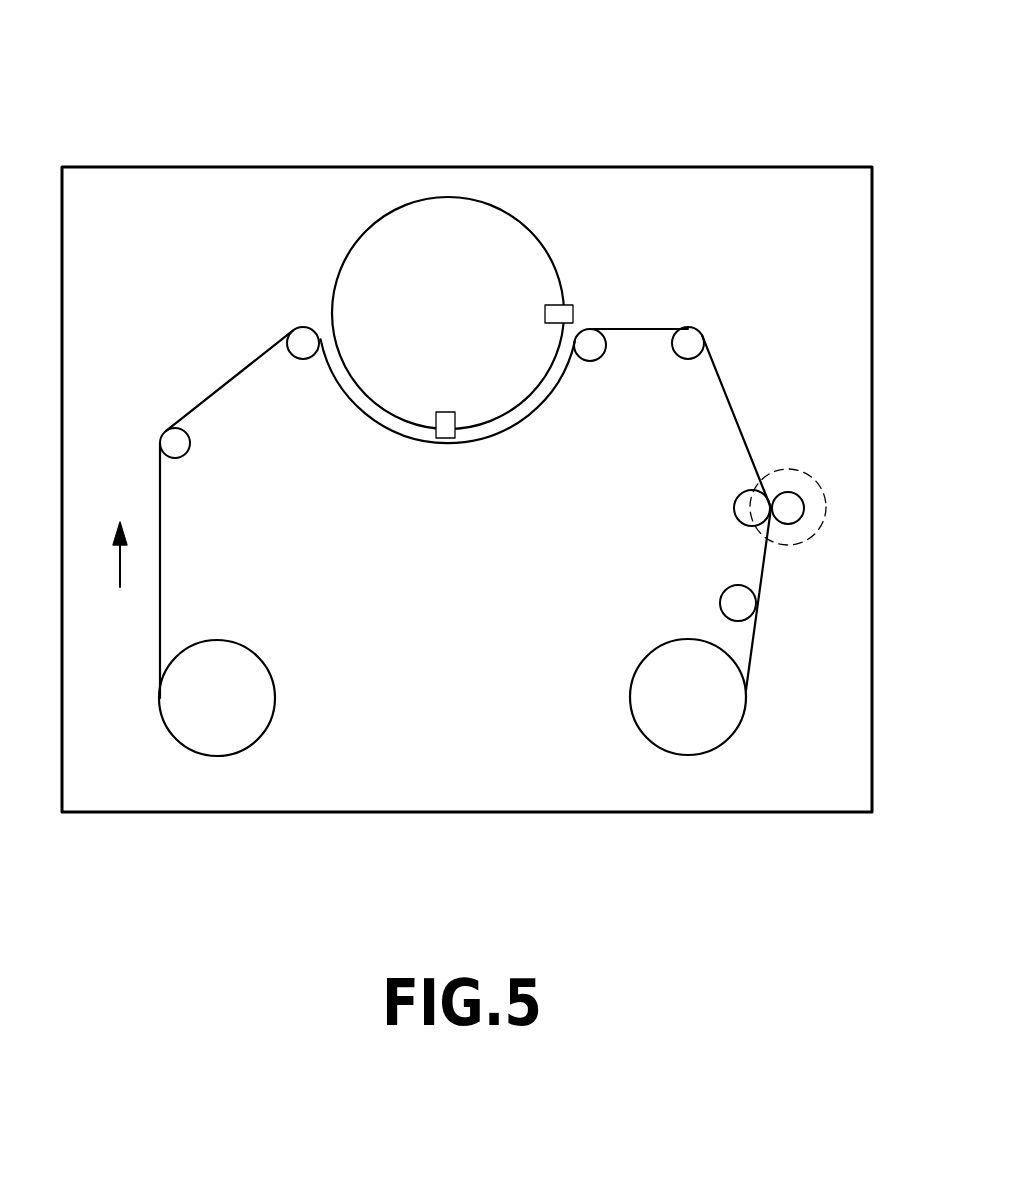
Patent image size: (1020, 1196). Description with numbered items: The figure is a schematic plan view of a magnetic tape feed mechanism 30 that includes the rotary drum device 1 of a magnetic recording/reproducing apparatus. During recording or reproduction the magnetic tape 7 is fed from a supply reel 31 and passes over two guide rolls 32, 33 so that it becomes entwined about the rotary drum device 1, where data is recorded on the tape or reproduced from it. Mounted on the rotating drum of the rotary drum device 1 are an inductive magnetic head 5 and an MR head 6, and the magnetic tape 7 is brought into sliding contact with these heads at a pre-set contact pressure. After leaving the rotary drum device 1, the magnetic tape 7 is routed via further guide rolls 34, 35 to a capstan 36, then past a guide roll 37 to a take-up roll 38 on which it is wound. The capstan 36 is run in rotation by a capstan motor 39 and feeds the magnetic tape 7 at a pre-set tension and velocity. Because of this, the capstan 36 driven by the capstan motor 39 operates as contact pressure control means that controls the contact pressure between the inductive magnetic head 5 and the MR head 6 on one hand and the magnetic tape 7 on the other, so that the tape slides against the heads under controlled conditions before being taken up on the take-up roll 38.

The magnetic tape feed mechanism 30 is at (668, 132).
The rotary drum device 1 is at (568, 264).
The inductive magnetic head 5 is at (574, 300).
The MR head 6 is at (445, 432).
The magnetic tape 7 is at (655, 328).
The supply reel 31 is at (247, 683).
The guide roll 32 is at (180, 447).
The guide roll 33 is at (300, 350).
The guide roll 34 is at (590, 350).
The guide roll 35 is at (690, 349).
The capstan 36 is at (758, 368).
The guide roll 37 is at (728, 598).
The take-up roll 38 is at (705, 715).
The capstan motor 39 is at (806, 545).